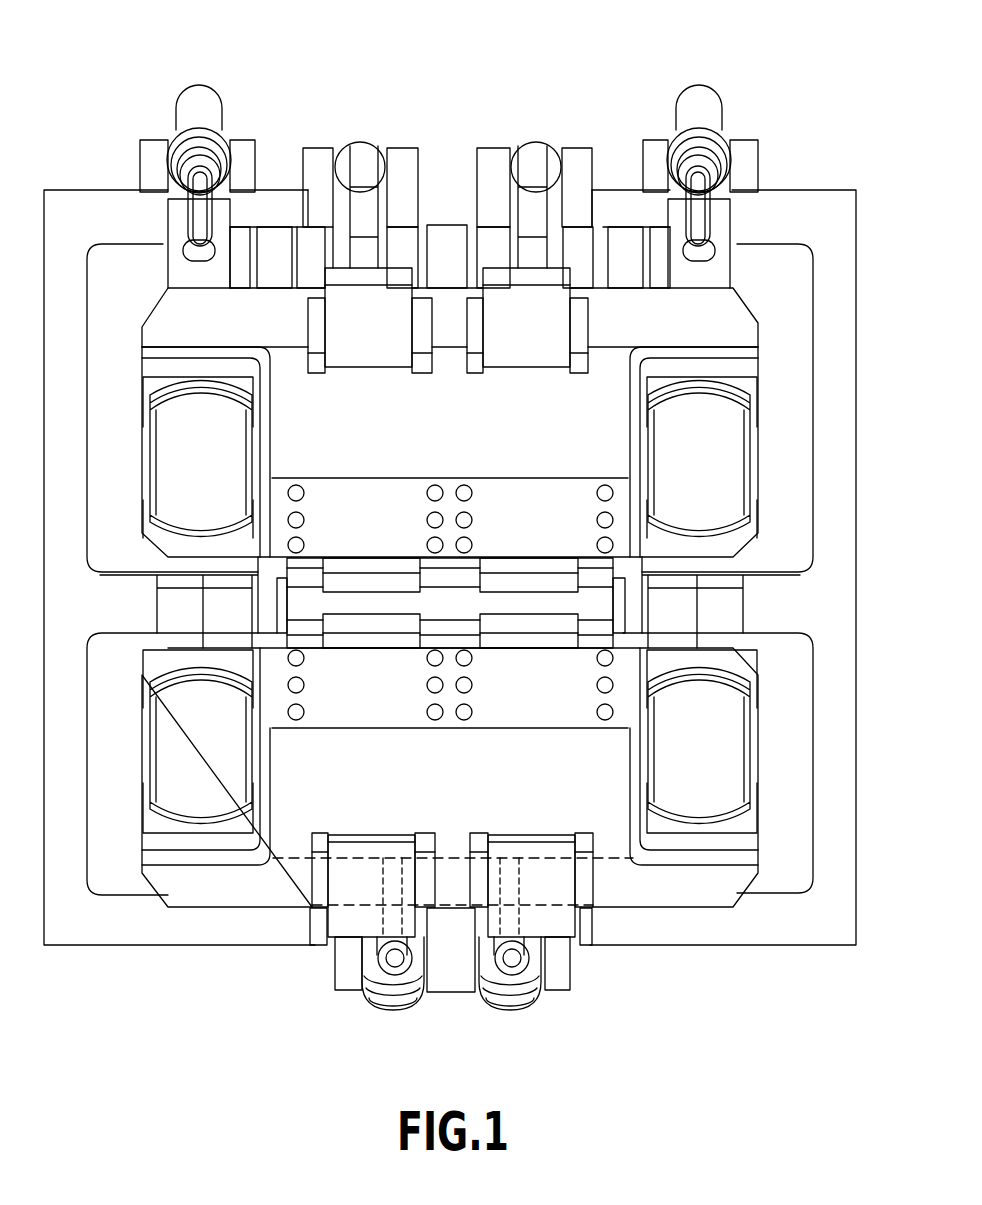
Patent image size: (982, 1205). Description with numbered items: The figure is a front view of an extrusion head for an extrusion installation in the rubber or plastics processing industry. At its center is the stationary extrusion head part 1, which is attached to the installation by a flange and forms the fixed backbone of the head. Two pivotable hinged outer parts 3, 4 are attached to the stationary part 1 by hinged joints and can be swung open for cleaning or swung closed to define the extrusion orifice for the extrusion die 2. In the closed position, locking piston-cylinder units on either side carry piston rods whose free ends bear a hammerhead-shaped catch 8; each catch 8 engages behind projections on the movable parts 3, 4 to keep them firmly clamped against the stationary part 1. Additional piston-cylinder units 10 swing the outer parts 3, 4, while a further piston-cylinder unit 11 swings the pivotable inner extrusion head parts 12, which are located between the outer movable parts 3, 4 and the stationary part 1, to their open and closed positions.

The stationary extrusion head part 1 is at (817, 198).
The extrusion die 2 is at (520, 600).
The pivotable hinged outer part 3 is at (603, 387).
The pivotable hinged outer part 4 is at (602, 818).
The catch 8 is at (725, 413).
The piston-cylinder unit 10 is at (537, 152).
The piston-cylinder unit 11 is at (185, 97).
The pivotable inner extrusion head part 12 is at (533, 503).